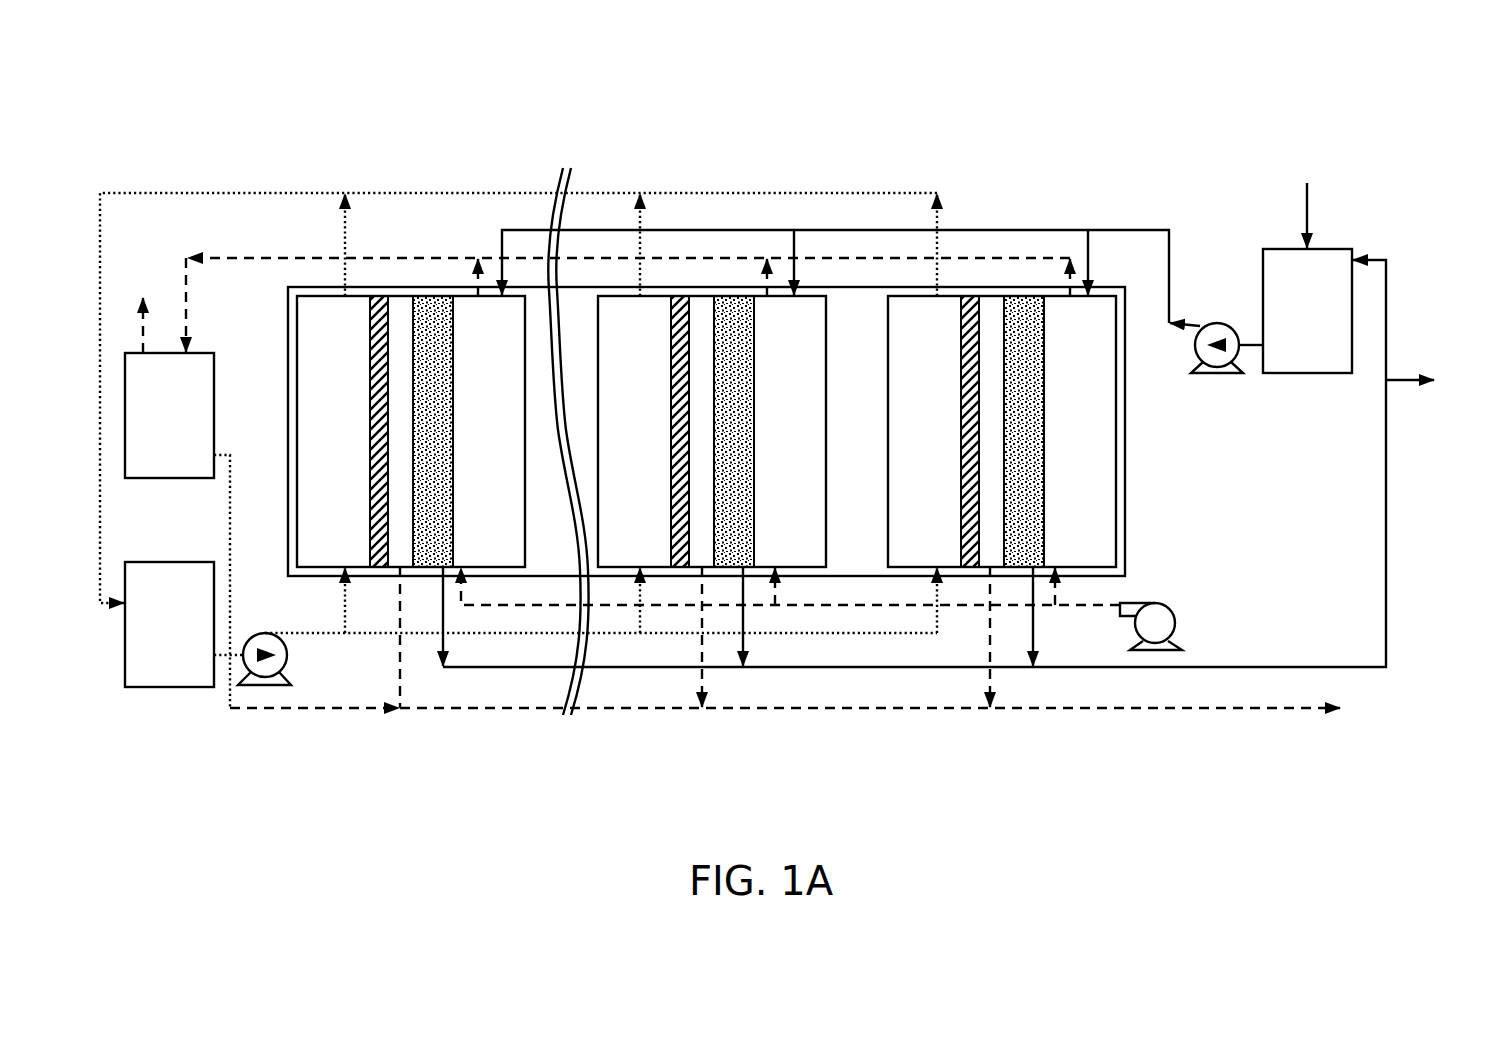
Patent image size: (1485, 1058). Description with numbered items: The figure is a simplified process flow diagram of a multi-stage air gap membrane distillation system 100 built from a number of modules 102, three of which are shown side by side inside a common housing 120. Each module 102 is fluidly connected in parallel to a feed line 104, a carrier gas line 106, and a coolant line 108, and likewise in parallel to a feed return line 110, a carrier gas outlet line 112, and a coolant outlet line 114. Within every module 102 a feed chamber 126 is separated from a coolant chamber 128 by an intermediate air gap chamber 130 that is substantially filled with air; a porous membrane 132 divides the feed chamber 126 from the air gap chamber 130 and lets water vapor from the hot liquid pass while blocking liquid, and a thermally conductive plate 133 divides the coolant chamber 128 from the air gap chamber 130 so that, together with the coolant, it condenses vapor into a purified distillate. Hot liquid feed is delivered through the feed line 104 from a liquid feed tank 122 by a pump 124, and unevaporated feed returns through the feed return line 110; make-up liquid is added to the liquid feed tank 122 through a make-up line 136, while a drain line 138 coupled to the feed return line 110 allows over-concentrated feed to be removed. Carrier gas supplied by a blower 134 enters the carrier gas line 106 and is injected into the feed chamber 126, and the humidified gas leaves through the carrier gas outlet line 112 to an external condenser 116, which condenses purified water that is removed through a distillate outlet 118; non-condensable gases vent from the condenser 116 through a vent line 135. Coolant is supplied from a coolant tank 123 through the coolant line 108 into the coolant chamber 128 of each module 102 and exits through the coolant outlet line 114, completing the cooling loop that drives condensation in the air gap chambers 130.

The MS-AGMD system 100 is at (1240, 128).
The module 102 is at (397, 285).
The feed line 104 is at (1140, 229).
The carrier gas line 106 is at (1060, 606).
The coolant line 108 is at (312, 633).
The feed return line 110 is at (1285, 668).
The carrier gas outlet line 112 is at (267, 258).
The coolant outlet line 114 is at (207, 192).
The external condenser 116 is at (148, 427).
The distillate outlet 118 is at (856, 709).
The housing 120 is at (1125, 482).
The liquid feed tank 122 is at (1287, 325).
The coolant tank 123 is at (148, 637).
The pump 124 is at (285, 672).
The feed chamber 126 is at (468, 447).
The coolant chamber 128 is at (309, 447).
The air gap chamber 130 is at (398, 522).
The membrane 132 is at (437, 529).
The thermally conductive plate 133 is at (378, 332).
The blower 134 is at (1176, 625).
The vent line 135 is at (140, 328).
The make-up line 136 is at (1309, 208).
The drain line 138 is at (1405, 379).